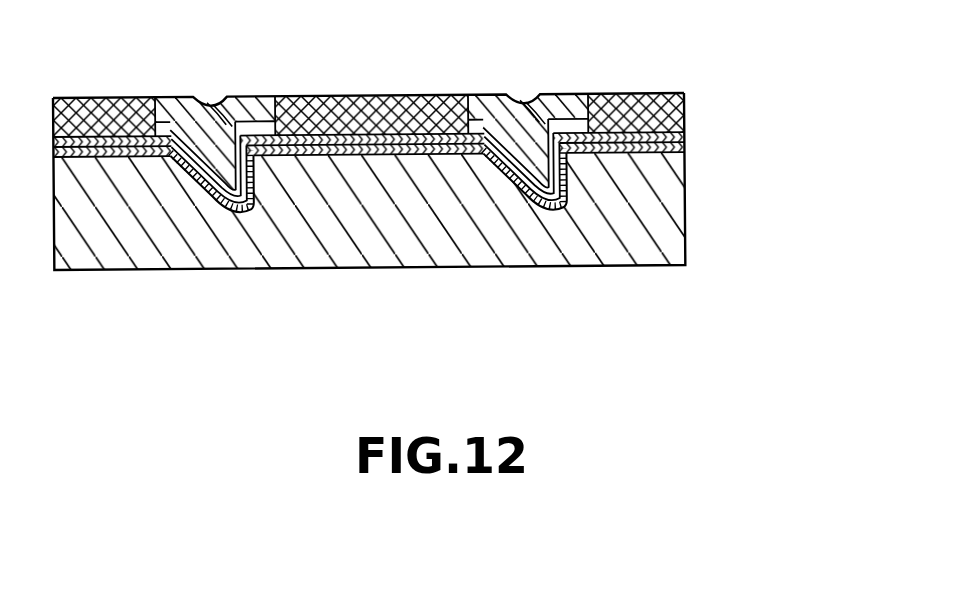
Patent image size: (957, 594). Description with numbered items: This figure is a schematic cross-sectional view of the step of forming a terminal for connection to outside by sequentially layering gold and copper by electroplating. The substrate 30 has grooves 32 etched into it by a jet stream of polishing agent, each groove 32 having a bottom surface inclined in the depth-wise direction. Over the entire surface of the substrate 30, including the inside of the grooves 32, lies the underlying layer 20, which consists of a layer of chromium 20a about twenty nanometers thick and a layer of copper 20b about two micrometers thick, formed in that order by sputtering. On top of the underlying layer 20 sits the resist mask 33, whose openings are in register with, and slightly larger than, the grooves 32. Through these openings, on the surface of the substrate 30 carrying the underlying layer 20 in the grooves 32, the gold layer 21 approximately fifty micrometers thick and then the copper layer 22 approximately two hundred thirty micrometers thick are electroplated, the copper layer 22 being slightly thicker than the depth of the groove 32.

The underlying layer 20 is at (458, 149).
The layer of chromium 20a is at (685, 147).
The layer of copper 20b is at (685, 136).
The gold layer 21 is at (485, 94).
The copper layer 22 is at (549, 93).
The substrate 30 is at (675, 223).
The groove 32 is at (562, 188).
The resist mask 33 is at (640, 93).